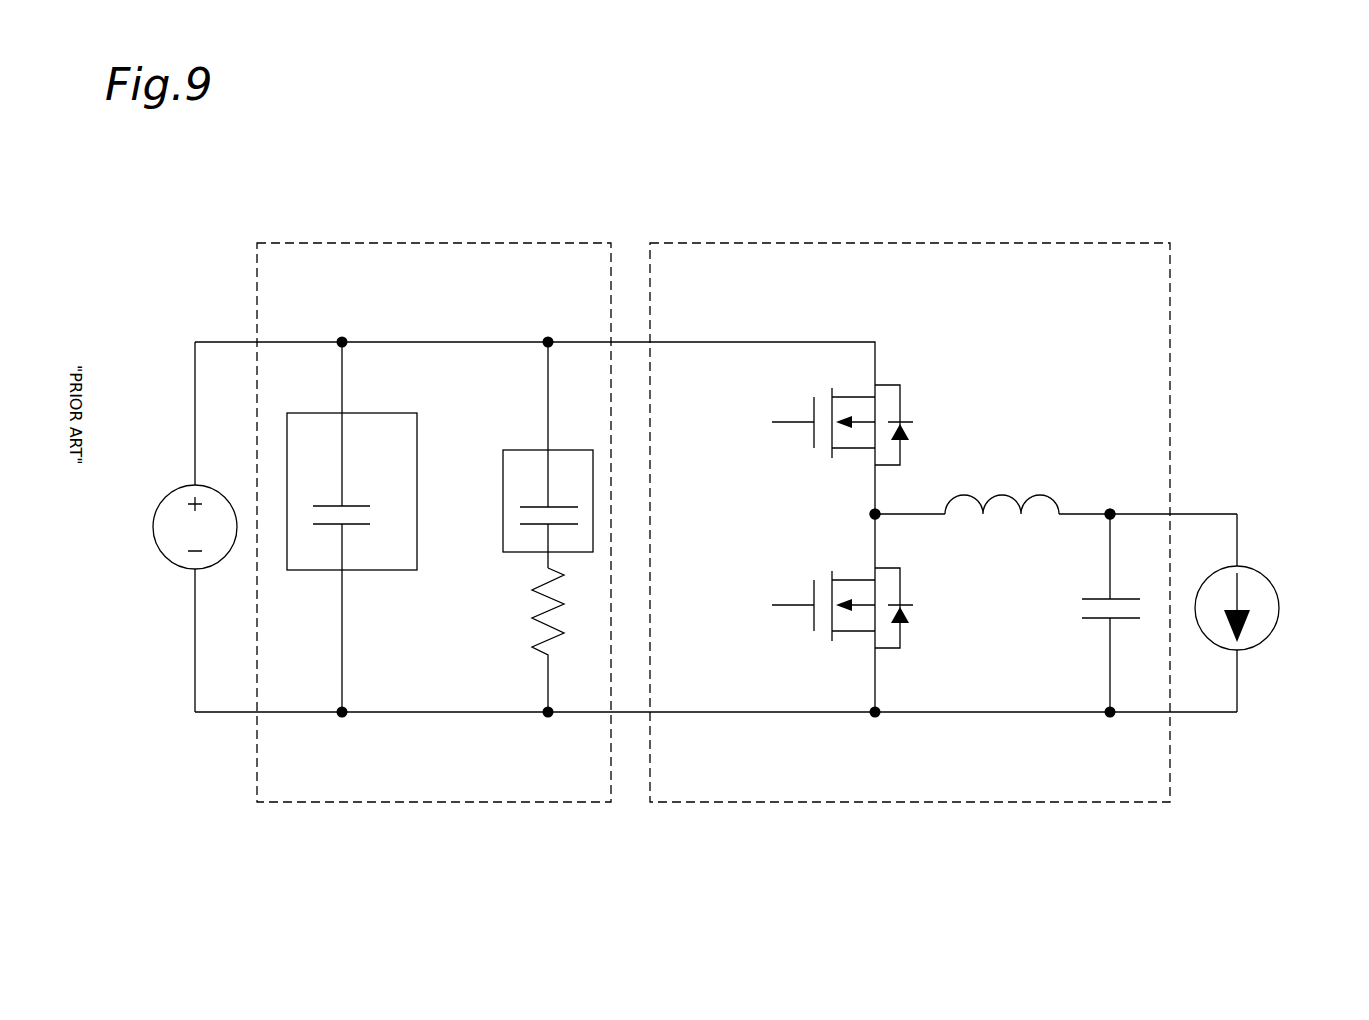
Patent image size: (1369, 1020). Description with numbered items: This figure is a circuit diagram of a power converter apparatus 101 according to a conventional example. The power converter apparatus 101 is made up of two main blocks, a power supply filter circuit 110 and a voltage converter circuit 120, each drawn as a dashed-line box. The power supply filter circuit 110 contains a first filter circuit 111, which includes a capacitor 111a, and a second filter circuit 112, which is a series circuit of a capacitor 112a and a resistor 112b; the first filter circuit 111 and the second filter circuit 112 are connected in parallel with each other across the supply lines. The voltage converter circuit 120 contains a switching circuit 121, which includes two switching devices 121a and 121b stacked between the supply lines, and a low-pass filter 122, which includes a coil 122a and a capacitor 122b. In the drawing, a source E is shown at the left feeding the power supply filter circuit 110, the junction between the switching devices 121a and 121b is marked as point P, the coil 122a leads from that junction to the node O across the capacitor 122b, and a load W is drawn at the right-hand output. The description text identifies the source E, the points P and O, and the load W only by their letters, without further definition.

The power converter apparatus 101 is at (727, 165).
The power supply filter circuit 110 is at (497, 243).
The voltage converter circuit 120 is at (680, 243).
The first filter circuit 111 is at (342, 559).
The capacitor 111a is at (355, 504).
The second filter circuit 112 is at (487, 527).
The capacitor 112a is at (519, 514).
The resistor 112b is at (447, 557).
The switching circuit 121 is at (785, 516).
The switching device 121a is at (818, 452).
The switching device 121b is at (822, 580).
The low-pass filter 122 is at (1033, 603).
The coil 122a is at (1003, 517).
The capacitor 122b is at (1093, 620).
The DC power source E is at (162, 505).
The load W is at (1252, 648).
The switching node P is at (878, 518).
The output node O is at (1110, 512).